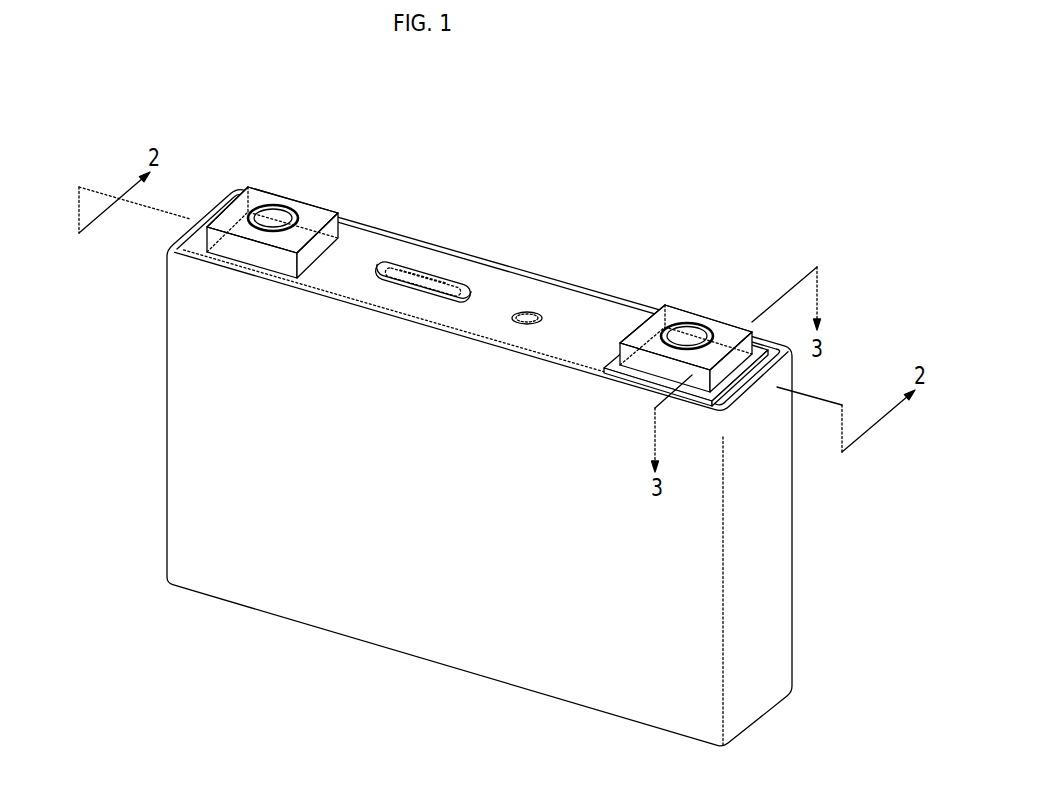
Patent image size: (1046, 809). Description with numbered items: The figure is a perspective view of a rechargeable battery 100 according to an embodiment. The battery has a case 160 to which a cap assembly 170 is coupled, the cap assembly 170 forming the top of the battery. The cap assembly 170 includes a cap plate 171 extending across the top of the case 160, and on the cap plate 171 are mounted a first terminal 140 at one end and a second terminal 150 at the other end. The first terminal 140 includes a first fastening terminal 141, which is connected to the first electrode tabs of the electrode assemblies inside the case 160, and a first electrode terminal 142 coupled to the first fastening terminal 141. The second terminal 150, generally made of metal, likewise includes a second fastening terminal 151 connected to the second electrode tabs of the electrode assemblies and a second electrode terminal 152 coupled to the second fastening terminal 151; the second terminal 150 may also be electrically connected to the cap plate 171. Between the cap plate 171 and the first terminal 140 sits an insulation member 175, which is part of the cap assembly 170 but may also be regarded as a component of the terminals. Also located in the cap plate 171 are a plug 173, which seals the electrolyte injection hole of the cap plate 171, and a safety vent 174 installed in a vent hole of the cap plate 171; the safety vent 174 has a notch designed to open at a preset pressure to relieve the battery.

The rechargeable battery 100 is at (890, 252).
The first terminal 140 is at (689, 296).
The first fastening terminal 141 is at (687, 330).
The first electrode terminal 142 is at (722, 334).
The second terminal 150 is at (275, 181).
The second fastening terminal 151 is at (273, 210).
The second electrode terminal 152 is at (308, 213).
The case 160 is at (766, 578).
The cap assembly 170 is at (478, 273).
The cap plate 171 is at (363, 247).
The plug 173 is at (531, 314).
The safety vent 174 is at (447, 278).
The insulation member 175 is at (770, 380).